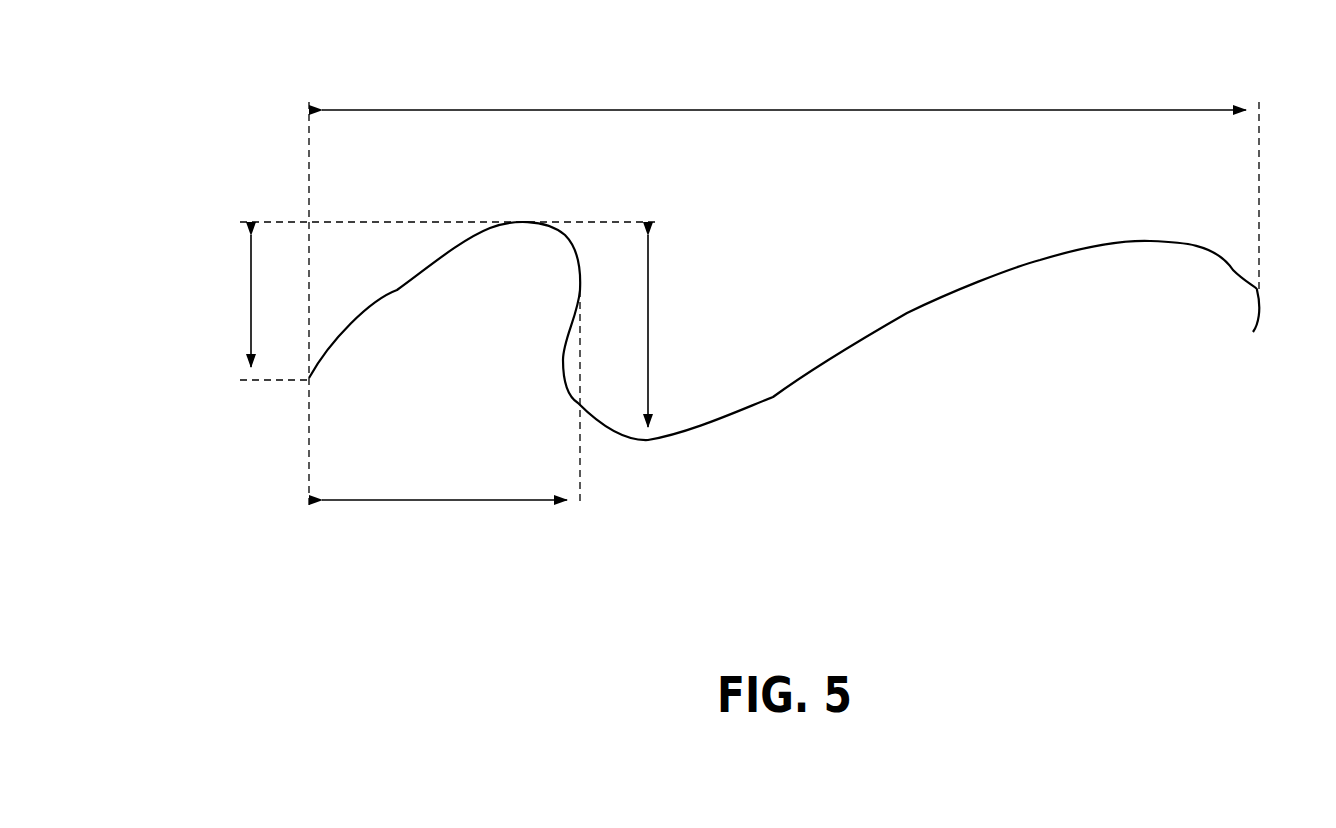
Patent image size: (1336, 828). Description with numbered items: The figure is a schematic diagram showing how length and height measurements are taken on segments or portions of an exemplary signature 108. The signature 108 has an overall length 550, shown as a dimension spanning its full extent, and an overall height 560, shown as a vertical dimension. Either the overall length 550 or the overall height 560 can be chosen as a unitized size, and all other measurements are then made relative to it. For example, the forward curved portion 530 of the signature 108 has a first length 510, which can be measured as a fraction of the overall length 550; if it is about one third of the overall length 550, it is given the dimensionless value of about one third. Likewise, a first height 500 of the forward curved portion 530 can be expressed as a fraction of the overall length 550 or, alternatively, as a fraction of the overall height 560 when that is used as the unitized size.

The signature 108 is at (925, 312).
The first height 500 is at (250, 300).
The first length 510 is at (438, 500).
The forward curved portion 530 is at (400, 253).
The overall length 550 is at (810, 109).
The overall height 560 is at (650, 325).